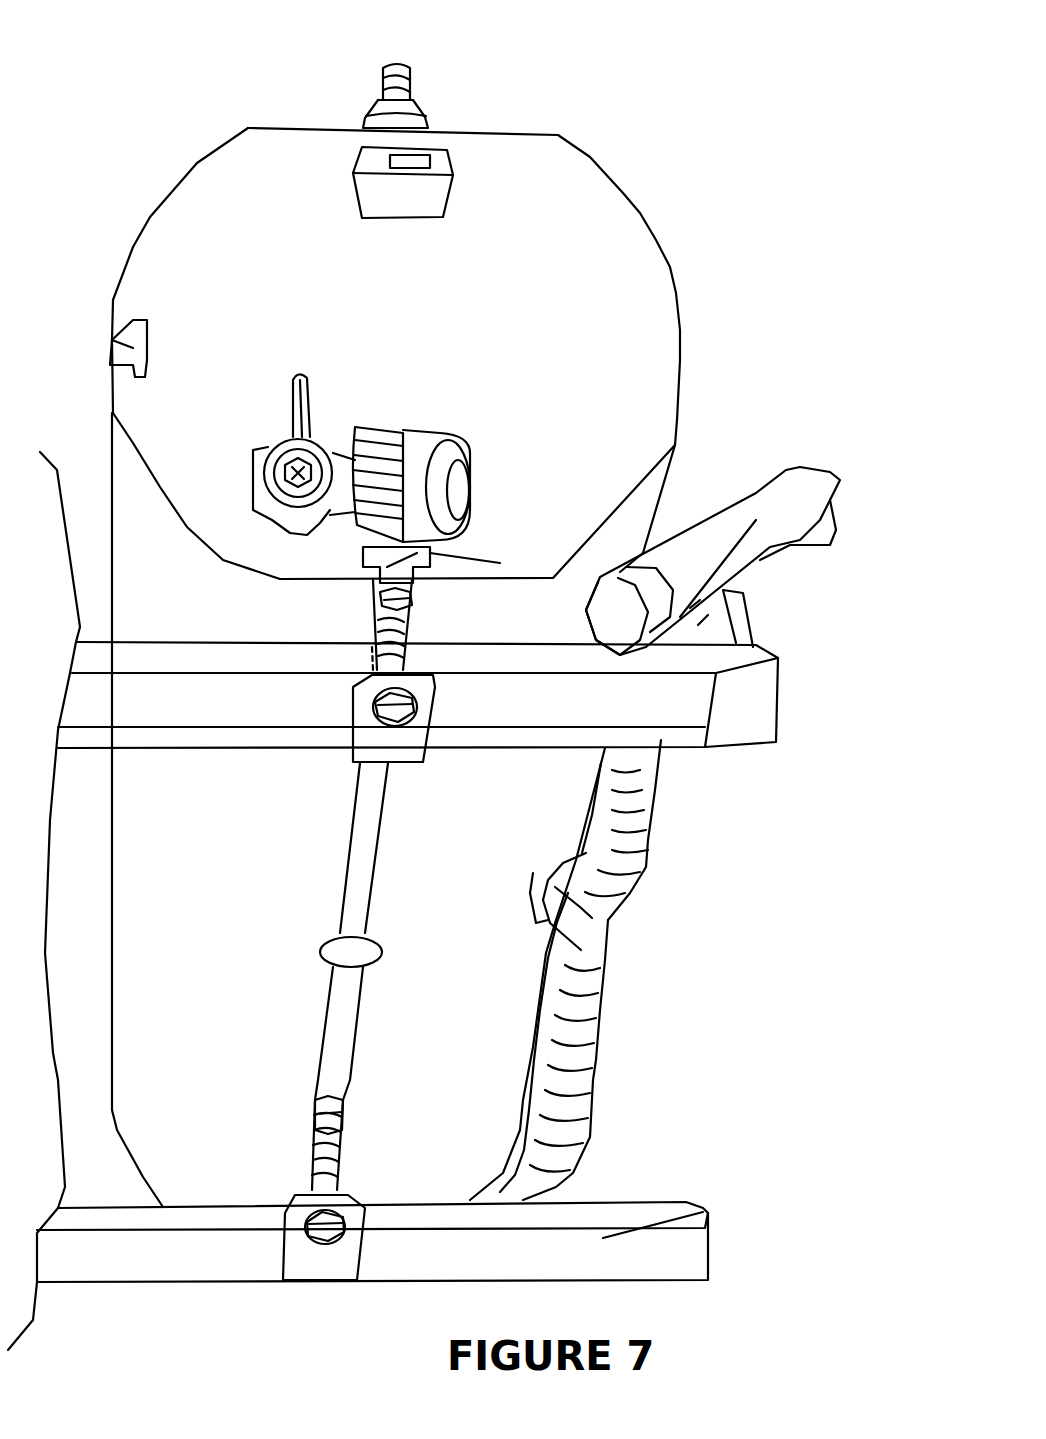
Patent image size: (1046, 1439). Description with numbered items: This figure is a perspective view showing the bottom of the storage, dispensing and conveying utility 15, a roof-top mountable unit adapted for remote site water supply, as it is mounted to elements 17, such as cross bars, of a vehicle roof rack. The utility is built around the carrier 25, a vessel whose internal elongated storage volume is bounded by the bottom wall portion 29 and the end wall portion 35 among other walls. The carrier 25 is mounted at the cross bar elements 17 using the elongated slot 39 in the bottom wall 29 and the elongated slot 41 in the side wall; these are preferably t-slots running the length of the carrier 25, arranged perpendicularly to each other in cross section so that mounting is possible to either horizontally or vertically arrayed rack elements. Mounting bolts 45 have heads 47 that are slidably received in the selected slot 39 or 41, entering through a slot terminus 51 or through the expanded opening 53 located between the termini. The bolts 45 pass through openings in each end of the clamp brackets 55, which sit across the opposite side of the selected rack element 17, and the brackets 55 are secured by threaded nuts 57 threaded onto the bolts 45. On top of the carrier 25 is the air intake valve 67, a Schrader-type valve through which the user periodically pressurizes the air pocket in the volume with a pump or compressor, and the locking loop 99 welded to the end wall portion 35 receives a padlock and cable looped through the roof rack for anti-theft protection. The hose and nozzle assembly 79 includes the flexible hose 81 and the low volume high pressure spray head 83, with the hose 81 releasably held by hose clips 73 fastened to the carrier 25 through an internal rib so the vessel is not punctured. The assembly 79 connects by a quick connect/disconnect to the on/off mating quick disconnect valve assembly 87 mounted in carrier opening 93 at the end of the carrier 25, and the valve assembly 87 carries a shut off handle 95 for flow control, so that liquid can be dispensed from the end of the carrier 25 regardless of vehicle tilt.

The storage, dispensing and conveying utility 15 is at (105, 102).
The elements of roof rack 17 is at (690, 700).
The carrier 25 is at (387, 322).
The bottom wall portion 29 is at (443, 1112).
The end wall portion 35 is at (303, 170).
The elongated slot 39 is at (360, 855).
The elongated slot 41 is at (143, 320).
The mounting bolts 45 is at (390, 633).
The heads 47 is at (412, 593).
The slot terminus 51 is at (500, 563).
The expanded opening 53 is at (347, 952).
The clamp brackets 55 is at (367, 713).
The threaded nuts 57 is at (372, 742).
The air intake valve 67 is at (400, 93).
The hose clips 73 is at (553, 912).
The hose and nozzle assembly 79 is at (593, 1013).
The flexible hose 81 is at (646, 865).
The low volume high pressure spray head 83 is at (736, 578).
The on/off mating quick disconnect valve assembly 87 is at (467, 447).
The carrier opening 93 is at (260, 523).
The shut off handle 95 is at (300, 387).
The locking loop 99 is at (435, 198).